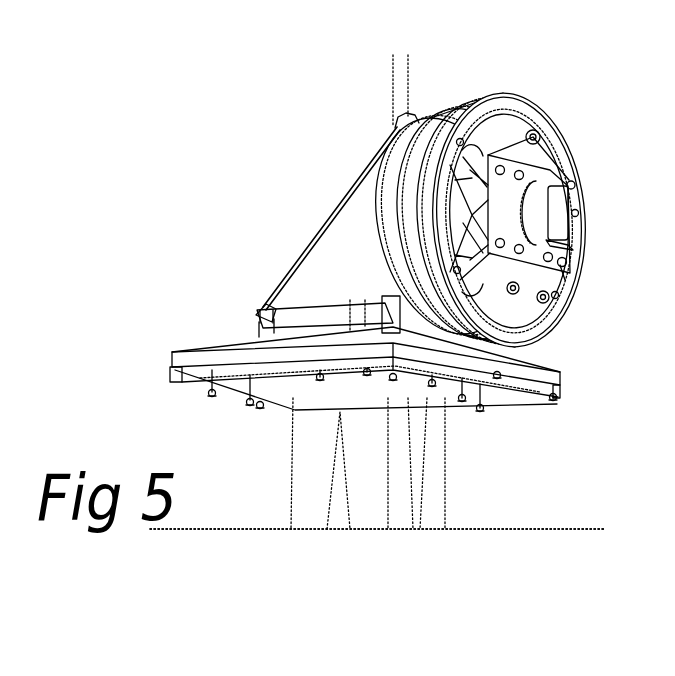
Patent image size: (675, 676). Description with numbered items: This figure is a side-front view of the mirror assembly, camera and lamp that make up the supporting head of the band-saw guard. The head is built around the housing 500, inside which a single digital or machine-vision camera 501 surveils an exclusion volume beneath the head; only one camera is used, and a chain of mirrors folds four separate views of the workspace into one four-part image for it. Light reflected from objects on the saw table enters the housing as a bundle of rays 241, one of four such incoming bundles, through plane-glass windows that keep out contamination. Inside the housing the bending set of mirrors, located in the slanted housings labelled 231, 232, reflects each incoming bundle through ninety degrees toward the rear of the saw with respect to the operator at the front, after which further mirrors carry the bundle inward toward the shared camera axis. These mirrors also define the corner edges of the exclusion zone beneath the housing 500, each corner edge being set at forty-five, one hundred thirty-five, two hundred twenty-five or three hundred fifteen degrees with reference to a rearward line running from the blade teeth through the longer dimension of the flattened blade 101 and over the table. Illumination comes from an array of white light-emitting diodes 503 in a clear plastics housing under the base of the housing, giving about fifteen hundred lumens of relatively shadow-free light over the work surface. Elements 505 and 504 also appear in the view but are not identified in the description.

The housing 500 is at (187, 66).
The flattened blade 101 is at (392, 100).
The bending mirror 231 is at (324, 222).
The bending mirror 232 is at (328, 232).
The drum 505 is at (456, 106).
The camera 501 is at (567, 172).
The mounting plate 504 is at (173, 350).
The array of white light-emitting diodes 503 is at (201, 383).
The bundle of rays 241 is at (413, 577).